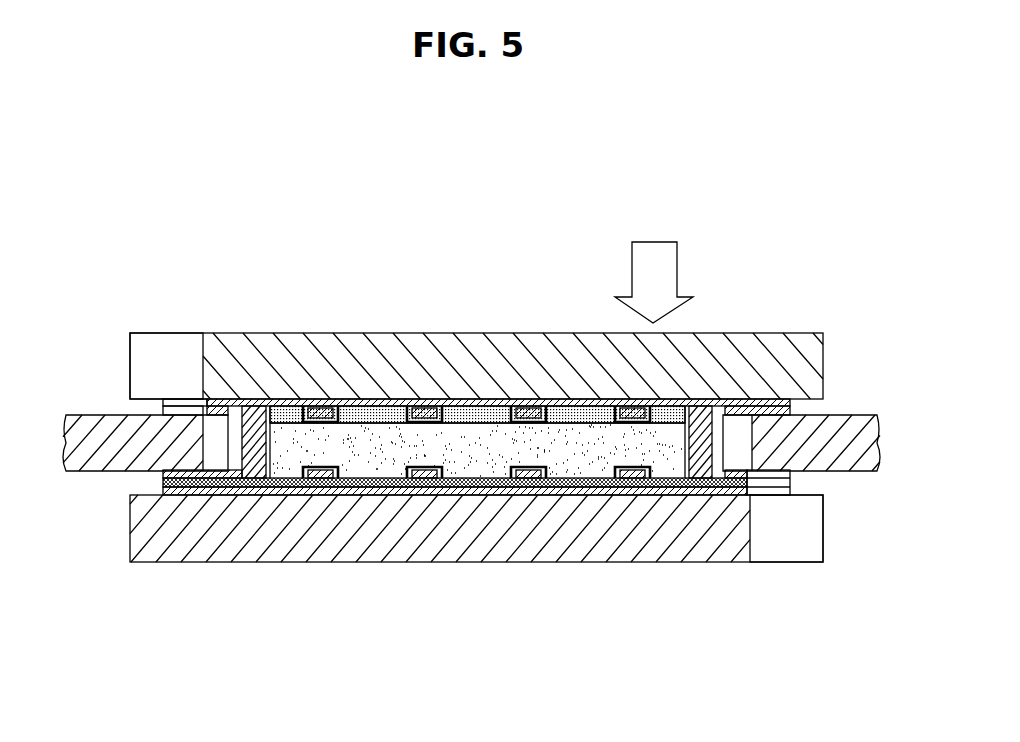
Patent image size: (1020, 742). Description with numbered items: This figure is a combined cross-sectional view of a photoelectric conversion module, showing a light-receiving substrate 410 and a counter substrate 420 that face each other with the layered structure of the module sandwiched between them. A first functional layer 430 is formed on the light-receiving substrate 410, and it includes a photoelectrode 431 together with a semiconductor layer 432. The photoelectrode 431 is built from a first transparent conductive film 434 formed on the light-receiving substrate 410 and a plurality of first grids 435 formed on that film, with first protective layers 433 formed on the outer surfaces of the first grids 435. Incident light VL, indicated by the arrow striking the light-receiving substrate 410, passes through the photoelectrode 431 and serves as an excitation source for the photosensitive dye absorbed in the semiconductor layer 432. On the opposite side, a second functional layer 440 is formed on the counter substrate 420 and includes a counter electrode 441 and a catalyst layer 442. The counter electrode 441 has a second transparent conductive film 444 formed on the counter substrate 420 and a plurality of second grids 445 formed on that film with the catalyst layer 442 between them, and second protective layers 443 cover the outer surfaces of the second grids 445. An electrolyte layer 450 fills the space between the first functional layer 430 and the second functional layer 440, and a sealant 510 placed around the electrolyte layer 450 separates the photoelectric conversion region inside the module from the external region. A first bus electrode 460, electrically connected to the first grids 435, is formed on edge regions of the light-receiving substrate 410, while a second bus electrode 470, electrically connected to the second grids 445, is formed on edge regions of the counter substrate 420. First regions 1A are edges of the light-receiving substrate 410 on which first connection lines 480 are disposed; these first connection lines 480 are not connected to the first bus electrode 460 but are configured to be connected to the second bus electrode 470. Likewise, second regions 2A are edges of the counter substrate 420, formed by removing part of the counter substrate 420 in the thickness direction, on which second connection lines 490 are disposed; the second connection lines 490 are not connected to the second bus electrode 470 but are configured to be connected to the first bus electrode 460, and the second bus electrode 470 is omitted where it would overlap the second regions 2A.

The light-receiving substrate 410 is at (798, 338).
The counter substrate 420 is at (193, 548).
The first functional layer 430 is at (498, 303).
The photoelectrode 431 is at (453, 326).
The semiconductor layer 432 is at (488, 415).
The first protective layer 433 is at (445, 402).
The first transparent conductive film 434 is at (290, 405).
The first grid 435 is at (325, 408).
The second functional layer 440 is at (455, 582).
The counter electrode 441 is at (451, 560).
The catalyst layer 442 is at (390, 483).
The second protective layer 443 is at (445, 488).
The second transparent conductive film 444 is at (297, 484).
The second grid 445 is at (325, 475).
The electrolyte layer 450 is at (577, 453).
The first bus electrode 460 is at (212, 400).
The second bus electrode 470 is at (742, 479).
The first connection line 480 is at (100, 420).
The second connection line 490 is at (850, 417).
The sealant 510 is at (692, 477).
The first region 1A is at (151, 326).
The second region 2A is at (800, 575).
The incident light VL is at (654, 266).